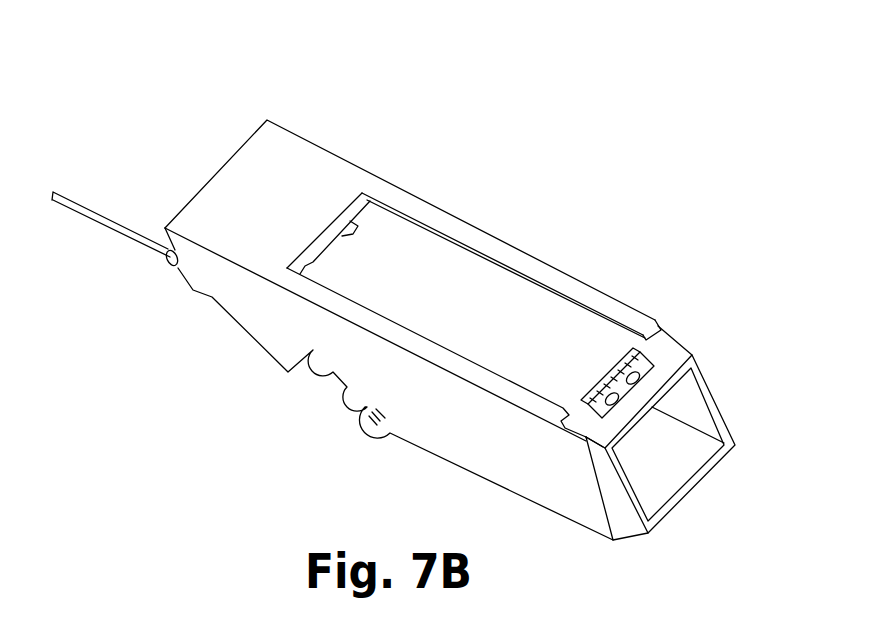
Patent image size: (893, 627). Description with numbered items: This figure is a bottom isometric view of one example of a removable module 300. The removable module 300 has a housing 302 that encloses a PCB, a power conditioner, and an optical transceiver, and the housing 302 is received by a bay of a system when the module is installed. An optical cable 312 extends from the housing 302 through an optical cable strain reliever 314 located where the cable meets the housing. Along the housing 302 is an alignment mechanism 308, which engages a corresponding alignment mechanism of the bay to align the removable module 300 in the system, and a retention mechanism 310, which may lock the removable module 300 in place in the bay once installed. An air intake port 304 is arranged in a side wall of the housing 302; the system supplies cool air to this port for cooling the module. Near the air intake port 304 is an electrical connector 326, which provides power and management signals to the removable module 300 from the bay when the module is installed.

The removable module 300 is at (488, 86).
The housing 302 is at (300, 137).
The air intake port 304 is at (680, 462).
The alignment mechanism 308 is at (517, 383).
The retention mechanism 310 is at (342, 237).
The optical cable 312 is at (78, 193).
The optical cable strain reliever 314 is at (171, 268).
The electrical connector 326 is at (650, 372).